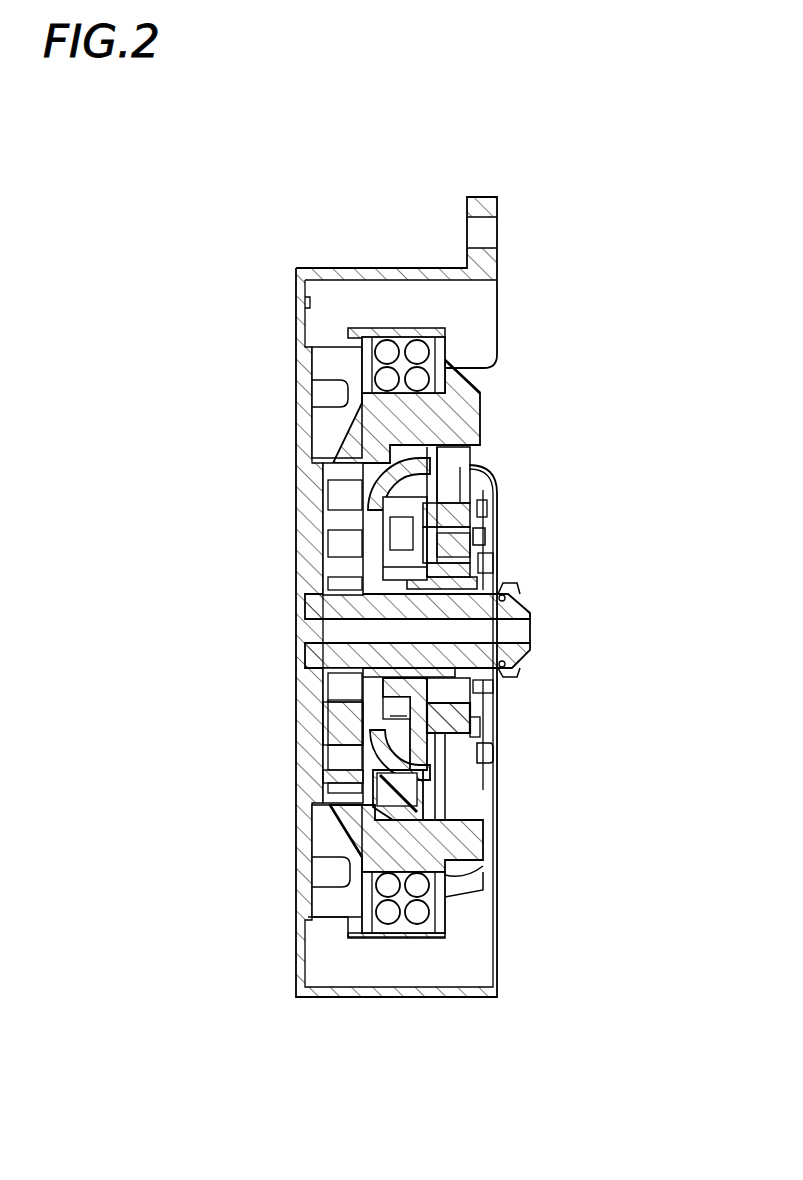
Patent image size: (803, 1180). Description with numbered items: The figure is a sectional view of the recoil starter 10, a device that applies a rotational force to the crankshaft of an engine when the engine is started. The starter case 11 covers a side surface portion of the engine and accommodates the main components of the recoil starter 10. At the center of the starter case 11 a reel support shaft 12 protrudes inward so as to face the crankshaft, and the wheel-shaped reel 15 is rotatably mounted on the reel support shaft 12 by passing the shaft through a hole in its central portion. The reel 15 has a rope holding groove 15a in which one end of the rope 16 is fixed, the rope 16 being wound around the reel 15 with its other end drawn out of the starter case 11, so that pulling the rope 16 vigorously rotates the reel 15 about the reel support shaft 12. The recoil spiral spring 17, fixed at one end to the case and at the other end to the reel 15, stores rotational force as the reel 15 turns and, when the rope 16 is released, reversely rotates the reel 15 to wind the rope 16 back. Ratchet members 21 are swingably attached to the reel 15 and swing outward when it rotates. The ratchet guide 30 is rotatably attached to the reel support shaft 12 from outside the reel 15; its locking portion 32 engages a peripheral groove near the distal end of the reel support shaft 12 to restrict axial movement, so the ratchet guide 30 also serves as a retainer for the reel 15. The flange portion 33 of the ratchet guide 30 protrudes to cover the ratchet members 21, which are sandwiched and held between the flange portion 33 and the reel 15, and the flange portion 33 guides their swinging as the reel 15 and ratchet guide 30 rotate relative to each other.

The recoil starter 10 is at (586, 191).
The starter case 11 is at (395, 268).
The reel support shaft 12 is at (530, 630).
The reel 15 is at (483, 410).
The rope holding groove 15a is at (433, 323).
The rope 16 is at (423, 910).
The recoil spiral spring 17 is at (345, 740).
The ratchet member 21 is at (483, 483).
The ratchet guide 30 is at (493, 727).
The locking portion 32 is at (505, 583).
The flange portion 33 is at (487, 537).